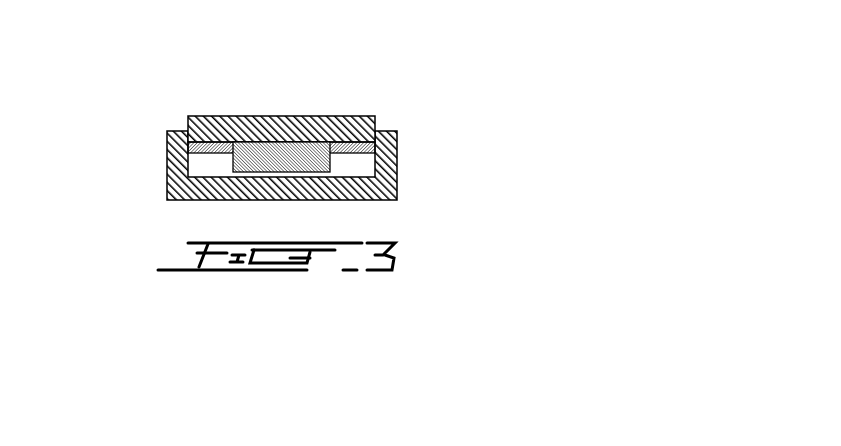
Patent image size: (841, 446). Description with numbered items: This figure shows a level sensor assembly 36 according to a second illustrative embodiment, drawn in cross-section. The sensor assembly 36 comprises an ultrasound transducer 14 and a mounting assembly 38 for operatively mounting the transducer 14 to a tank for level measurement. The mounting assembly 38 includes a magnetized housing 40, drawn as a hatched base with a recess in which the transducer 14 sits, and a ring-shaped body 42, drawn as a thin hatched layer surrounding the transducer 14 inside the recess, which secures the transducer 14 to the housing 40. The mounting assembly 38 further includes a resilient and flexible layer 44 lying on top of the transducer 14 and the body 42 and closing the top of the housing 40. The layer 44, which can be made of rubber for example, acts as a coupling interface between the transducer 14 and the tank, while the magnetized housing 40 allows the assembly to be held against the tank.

The ultrasound transducer 14 is at (308, 163).
The sensor assembly 36 is at (416, 61).
The mounting assembly 38 is at (153, 155).
The magnetized housing 40 is at (167, 188).
The ring-shaped body 42 is at (357, 152).
The resilient and flexible layer 44 is at (295, 118).